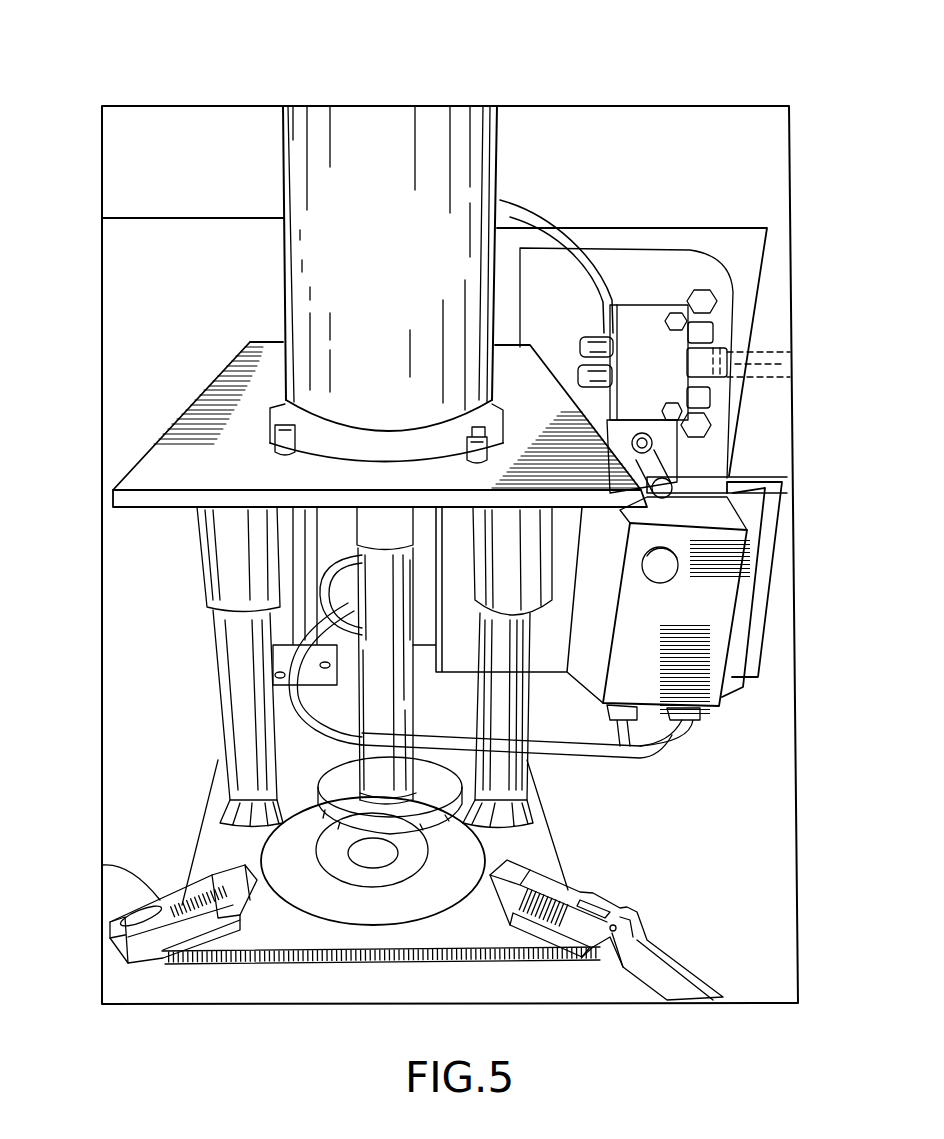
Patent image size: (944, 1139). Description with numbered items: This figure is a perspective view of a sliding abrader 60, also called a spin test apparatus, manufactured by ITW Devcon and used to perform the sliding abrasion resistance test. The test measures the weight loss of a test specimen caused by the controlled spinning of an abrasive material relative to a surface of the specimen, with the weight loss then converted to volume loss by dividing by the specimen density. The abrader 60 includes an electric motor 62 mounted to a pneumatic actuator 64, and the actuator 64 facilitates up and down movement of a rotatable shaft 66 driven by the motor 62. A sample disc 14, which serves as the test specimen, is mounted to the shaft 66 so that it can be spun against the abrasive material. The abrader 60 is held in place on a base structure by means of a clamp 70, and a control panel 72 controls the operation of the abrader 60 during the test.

The sliding abrader 60 is at (498, 104).
The electric motor 62 is at (283, 284).
The pneumatic actuator 64 is at (368, 597).
The rotatable shaft 66 is at (395, 735).
The sample disc 14 is at (330, 802).
The clamp 70 is at (182, 908).
The control panel 72 is at (748, 592).